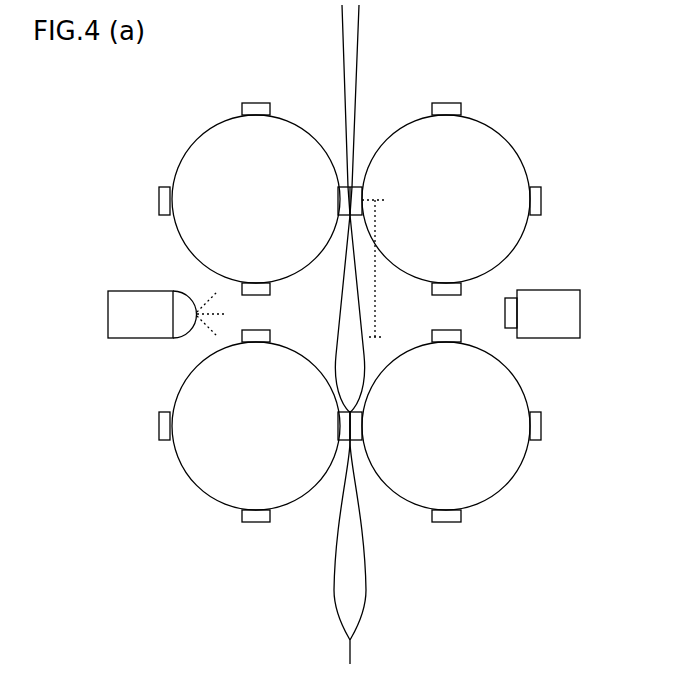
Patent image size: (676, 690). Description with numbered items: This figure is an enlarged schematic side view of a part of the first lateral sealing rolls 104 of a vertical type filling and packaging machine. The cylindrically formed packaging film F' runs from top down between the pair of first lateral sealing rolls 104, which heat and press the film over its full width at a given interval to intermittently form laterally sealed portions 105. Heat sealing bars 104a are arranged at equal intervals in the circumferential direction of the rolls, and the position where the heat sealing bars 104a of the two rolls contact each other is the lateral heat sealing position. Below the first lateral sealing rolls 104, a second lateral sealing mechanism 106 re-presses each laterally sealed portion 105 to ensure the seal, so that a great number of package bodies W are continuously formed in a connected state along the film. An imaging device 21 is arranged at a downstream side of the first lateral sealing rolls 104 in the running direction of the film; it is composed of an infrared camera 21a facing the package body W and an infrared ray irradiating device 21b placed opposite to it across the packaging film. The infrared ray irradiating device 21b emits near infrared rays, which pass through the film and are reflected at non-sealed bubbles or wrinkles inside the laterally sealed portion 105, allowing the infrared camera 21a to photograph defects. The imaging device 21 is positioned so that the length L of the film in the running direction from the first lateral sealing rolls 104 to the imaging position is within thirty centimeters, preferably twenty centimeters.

The first lateral sealing mechanism 104 is at (540, 163).
The heat sealing bars 104a is at (160, 199).
The laterally sealed portion 105 is at (350, 216).
The second lateral sealing mechanism 106 is at (142, 402).
The imaging device 21 is at (347, 316).
The infrared camera 21a is at (543, 328).
The infrared ray irradiating device 21b is at (127, 303).
The cylindrically formed packaging film F' is at (414, 334).
The package body W is at (338, 310).
The length of the packaging film in the running direction L is at (376, 268).